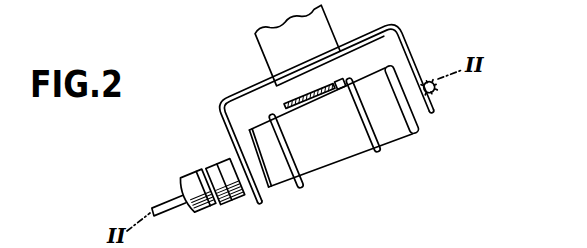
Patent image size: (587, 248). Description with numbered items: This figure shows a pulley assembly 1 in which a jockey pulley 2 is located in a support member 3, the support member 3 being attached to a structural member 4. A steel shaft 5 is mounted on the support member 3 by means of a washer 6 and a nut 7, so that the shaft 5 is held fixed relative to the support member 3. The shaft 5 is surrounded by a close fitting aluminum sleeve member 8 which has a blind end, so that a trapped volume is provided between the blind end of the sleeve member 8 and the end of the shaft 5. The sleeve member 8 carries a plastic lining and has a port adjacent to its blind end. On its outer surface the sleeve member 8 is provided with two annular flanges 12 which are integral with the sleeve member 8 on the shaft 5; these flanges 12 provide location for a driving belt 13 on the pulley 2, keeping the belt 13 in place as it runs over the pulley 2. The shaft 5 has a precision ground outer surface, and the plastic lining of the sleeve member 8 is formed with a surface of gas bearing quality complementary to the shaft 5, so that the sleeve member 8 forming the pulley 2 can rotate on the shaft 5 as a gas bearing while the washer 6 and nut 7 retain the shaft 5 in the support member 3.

The pulley assembly 1 is at (405, 34).
The jockey pulley 2 is at (312, 160).
The support member 3 is at (245, 88).
The structural member 4 is at (312, 40).
The steel shaft 5 is at (271, 190).
The washer 6 is at (250, 193).
The nut 7 is at (228, 190).
The aluminum sleeve member 8 is at (403, 124).
The annular flanges 12 is at (269, 117).
The driving belt 13 is at (339, 82).